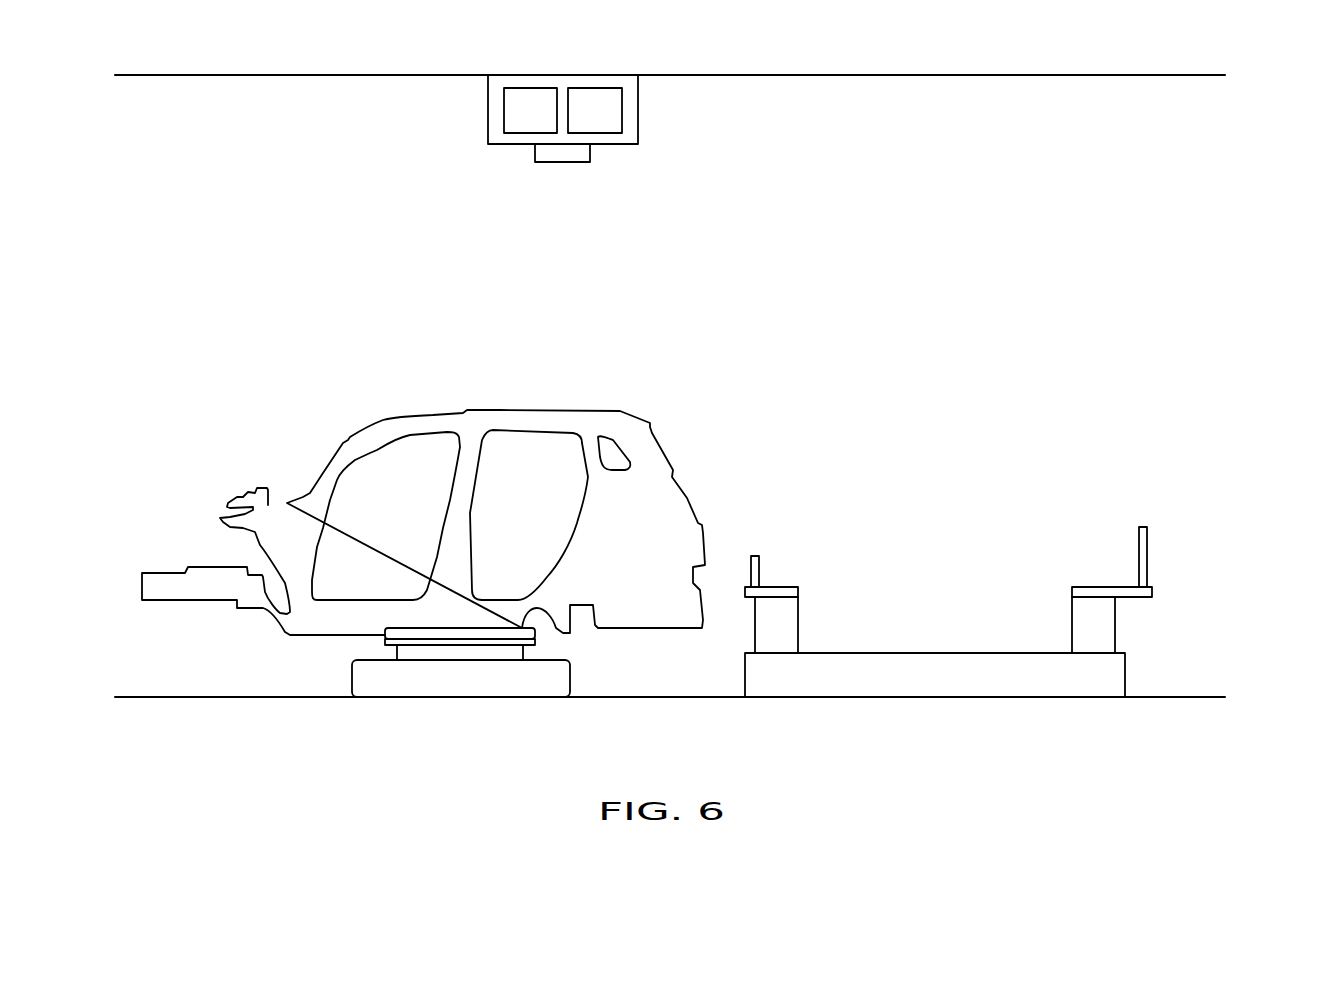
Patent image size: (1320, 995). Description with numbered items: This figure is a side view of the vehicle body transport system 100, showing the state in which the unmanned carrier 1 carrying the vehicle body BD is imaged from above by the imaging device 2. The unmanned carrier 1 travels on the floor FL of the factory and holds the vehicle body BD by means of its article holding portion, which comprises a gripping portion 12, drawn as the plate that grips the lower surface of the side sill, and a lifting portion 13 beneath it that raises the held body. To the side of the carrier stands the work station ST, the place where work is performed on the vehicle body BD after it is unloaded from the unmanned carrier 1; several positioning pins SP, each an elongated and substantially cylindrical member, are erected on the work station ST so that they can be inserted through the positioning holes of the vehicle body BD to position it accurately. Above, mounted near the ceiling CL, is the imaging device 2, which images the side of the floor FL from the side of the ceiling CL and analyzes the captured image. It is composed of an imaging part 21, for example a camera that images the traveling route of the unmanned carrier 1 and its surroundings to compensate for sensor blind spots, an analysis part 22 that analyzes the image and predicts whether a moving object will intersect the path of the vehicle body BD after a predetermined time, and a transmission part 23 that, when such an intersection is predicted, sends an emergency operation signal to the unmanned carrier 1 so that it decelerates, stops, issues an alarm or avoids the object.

The vehicle body transport system 100 is at (675, 386).
The unmanned carrier 1 is at (345, 678).
The gripping portion 12 is at (560, 634).
The lifting portion 13 is at (523, 650).
The imaging device 2 is at (574, 163).
The imaging part 21 is at (563, 163).
The analysis part 22 is at (504, 106).
The transmission part 23 is at (622, 104).
The vehicle body BD is at (677, 438).
The positioning pin SP is at (750, 578).
The work station ST is at (1200, 588).
The floor FL is at (1212, 697).
The ceiling CL is at (178, 75).